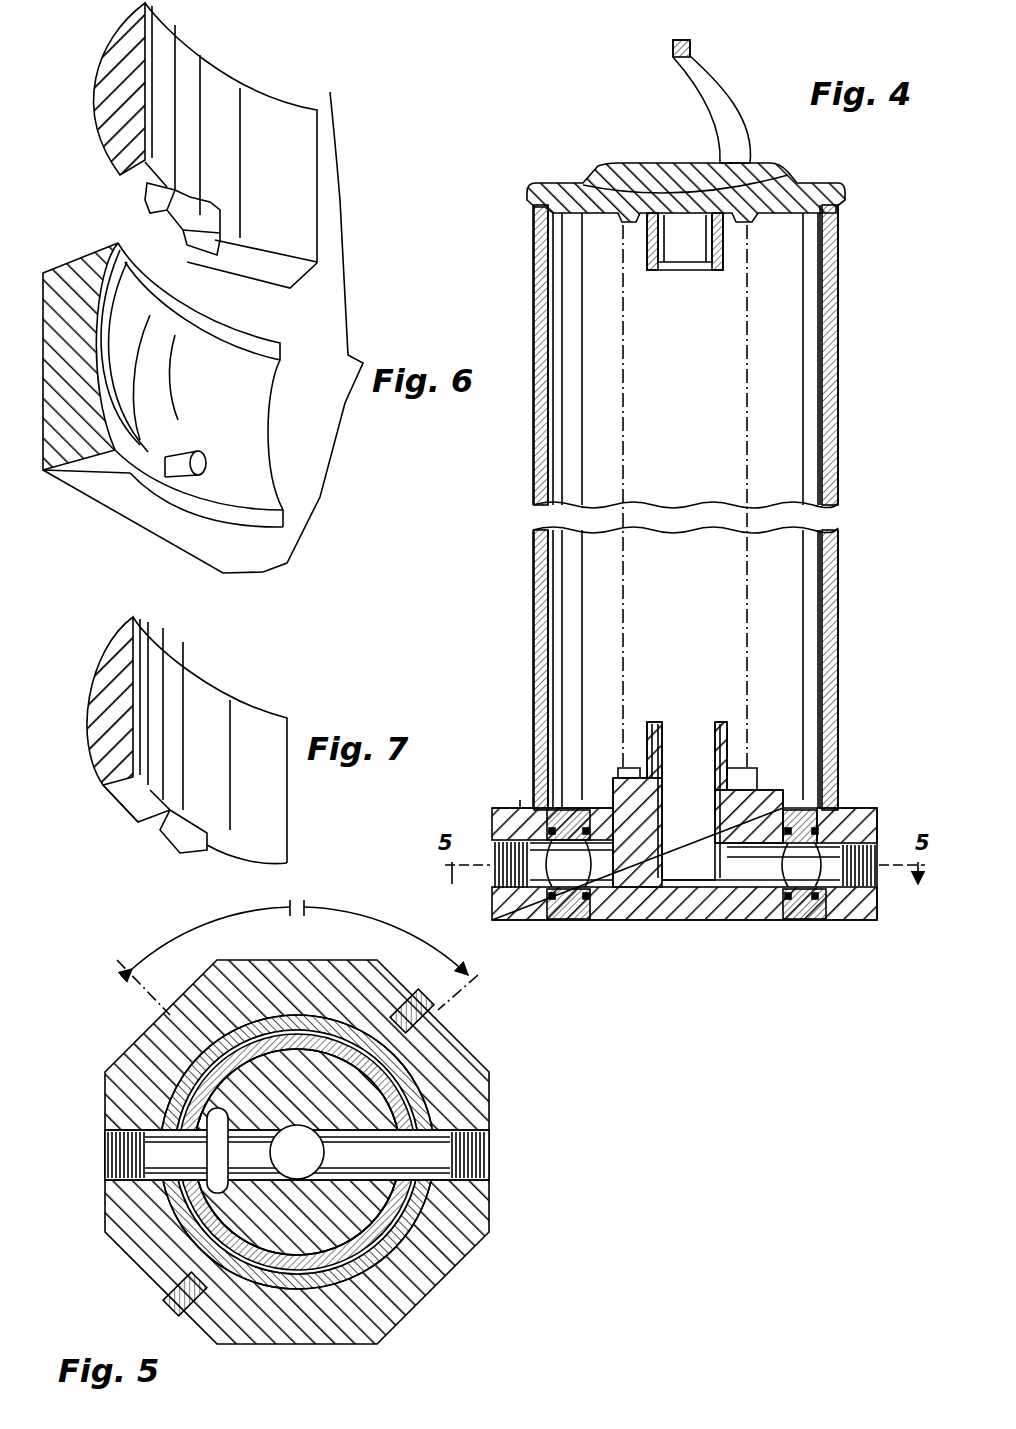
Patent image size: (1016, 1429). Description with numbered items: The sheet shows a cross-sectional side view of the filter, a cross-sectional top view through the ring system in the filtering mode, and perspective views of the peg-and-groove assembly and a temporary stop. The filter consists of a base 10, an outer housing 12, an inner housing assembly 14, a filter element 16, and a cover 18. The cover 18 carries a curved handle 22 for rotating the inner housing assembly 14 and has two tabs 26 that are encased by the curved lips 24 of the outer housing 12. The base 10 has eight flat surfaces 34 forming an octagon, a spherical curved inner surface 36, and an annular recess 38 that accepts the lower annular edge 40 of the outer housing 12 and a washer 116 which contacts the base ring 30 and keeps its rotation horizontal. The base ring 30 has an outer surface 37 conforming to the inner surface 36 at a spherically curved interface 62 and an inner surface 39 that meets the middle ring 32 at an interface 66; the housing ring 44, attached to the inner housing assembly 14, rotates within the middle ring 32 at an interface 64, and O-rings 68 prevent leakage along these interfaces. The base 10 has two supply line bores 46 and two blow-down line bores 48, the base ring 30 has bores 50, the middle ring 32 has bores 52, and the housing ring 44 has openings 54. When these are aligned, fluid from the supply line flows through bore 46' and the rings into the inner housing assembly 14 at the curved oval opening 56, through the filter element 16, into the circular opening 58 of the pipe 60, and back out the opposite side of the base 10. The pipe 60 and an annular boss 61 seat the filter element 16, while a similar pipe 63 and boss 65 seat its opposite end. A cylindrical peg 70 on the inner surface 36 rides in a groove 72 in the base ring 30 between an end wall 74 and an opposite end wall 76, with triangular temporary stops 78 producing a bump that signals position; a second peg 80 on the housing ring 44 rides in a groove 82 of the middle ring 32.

In FIG. 4, the base 10 is at (855, 920).
In FIG. 6, the base 10 is at (120, 522).
In FIG. 5, the base 10 is at (392, 1318).
In FIG. 4, the outer housing 12 is at (840, 430).
In FIG. 4, the inner housing assembly 14 is at (838, 550).
In FIG. 4, the filter element 16 is at (750, 430).
In FIG. 4, the cover 18 is at (800, 170).
In FIG. 4, the curved handle 22 is at (718, 80).
In FIG. 4, the curved lips 24 is at (540, 178).
In FIG. 4, the tabs 26 is at (527, 185).
In FIG. 4, the base ring 30 is at (800, 900).
In FIG. 6, the base ring 30 is at (248, 75).
In FIG. 7, the base ring 30 is at (222, 690).
In FIG. 5, the base ring 30 is at (285, 1280).
In FIG. 4, the middle ring 32 is at (585, 890).
In FIG. 5, the middle ring 32 is at (262, 1020).
In FIG. 5, the flat surfaces 34 is at (489, 1230).
In FIG. 4, the spherical curved inner surface 36 is at (820, 850).
In FIG. 6, the spherical curved inner surface 36 is at (258, 398).
In FIG. 5, the spherical curved inner surface 36 is at (325, 1025).
In FIG. 6, the outer surface 37 is at (96, 62).
In FIG. 7, the outer surface 37 is at (92, 650).
In FIG. 4, the annular recess 38 is at (505, 810).
In FIG. 6, the inner surface 39 is at (200, 75).
In FIG. 7, the inner surface 39 is at (170, 675).
In FIG. 4, the lower annular edge 40 is at (845, 808).
In FIG. 4, the housing ring 44 is at (690, 920).
In FIG. 5, the housing ring 44 is at (262, 1035).
In FIG. 4, the supply line bores 46 is at (688, 865).
In FIG. 5, the supply line bore 46' is at (93, 1155).
In FIG. 5, the blow-down line bores 48 is at (420, 1020).
In FIG. 5, the base ring bores 50 is at (145, 1178).
In FIG. 5, the middle ring bores 52 is at (480, 1152).
In FIG. 4, the bores 54 is at (605, 875).
In FIG. 5, the bores 54 is at (255, 1148).
In FIG. 4, the curved oval opening 56 is at (600, 800).
In FIG. 5, the curved oval opening 56 is at (310, 1090).
In FIG. 4, the circular opening 58 is at (665, 740).
In FIG. 5, the circular opening 58 is at (297, 1180).
In FIG. 4, the pipe 60 is at (722, 748).
In FIG. 4, the annular boss 61 is at (620, 780).
In FIG. 5, the spherically curved interface 62 is at (350, 1272).
In FIG. 4, the pipe 63 is at (650, 275).
In FIG. 5, the interface 64 is at (190, 1085).
In FIG. 4, the boss 65 is at (625, 218).
In FIG. 5, the interface 66 is at (405, 1215).
In FIG. 4, the O-rings 68 is at (796, 815).
In FIG. 5, the O-rings 68 is at (405, 1080).
In FIG. 6, the cylindrical peg 70 is at (203, 458).
In FIG. 5, the cylindrical peg 70 is at (190, 1062).
In FIG. 6, the groove 72 is at (142, 190).
In FIG. 7, the groove 72 is at (240, 860).
In FIG. 6, the end wall 74 is at (185, 248).
In FIG. 5, the end wall 74 is at (468, 975).
In FIG. 5, the opposite end wall 76 is at (132, 969).
In FIG. 6, the temporary stops 78 is at (160, 215).
In FIG. 7, the temporary stops 78 is at (170, 848).
In FIG. 5, the temporary stops 78 is at (298, 905).
In FIG. 5, the peg 80 is at (370, 1105).
In FIG. 5, the groove 82 is at (240, 1105).
In FIG. 4, the washer 116 is at (520, 800).